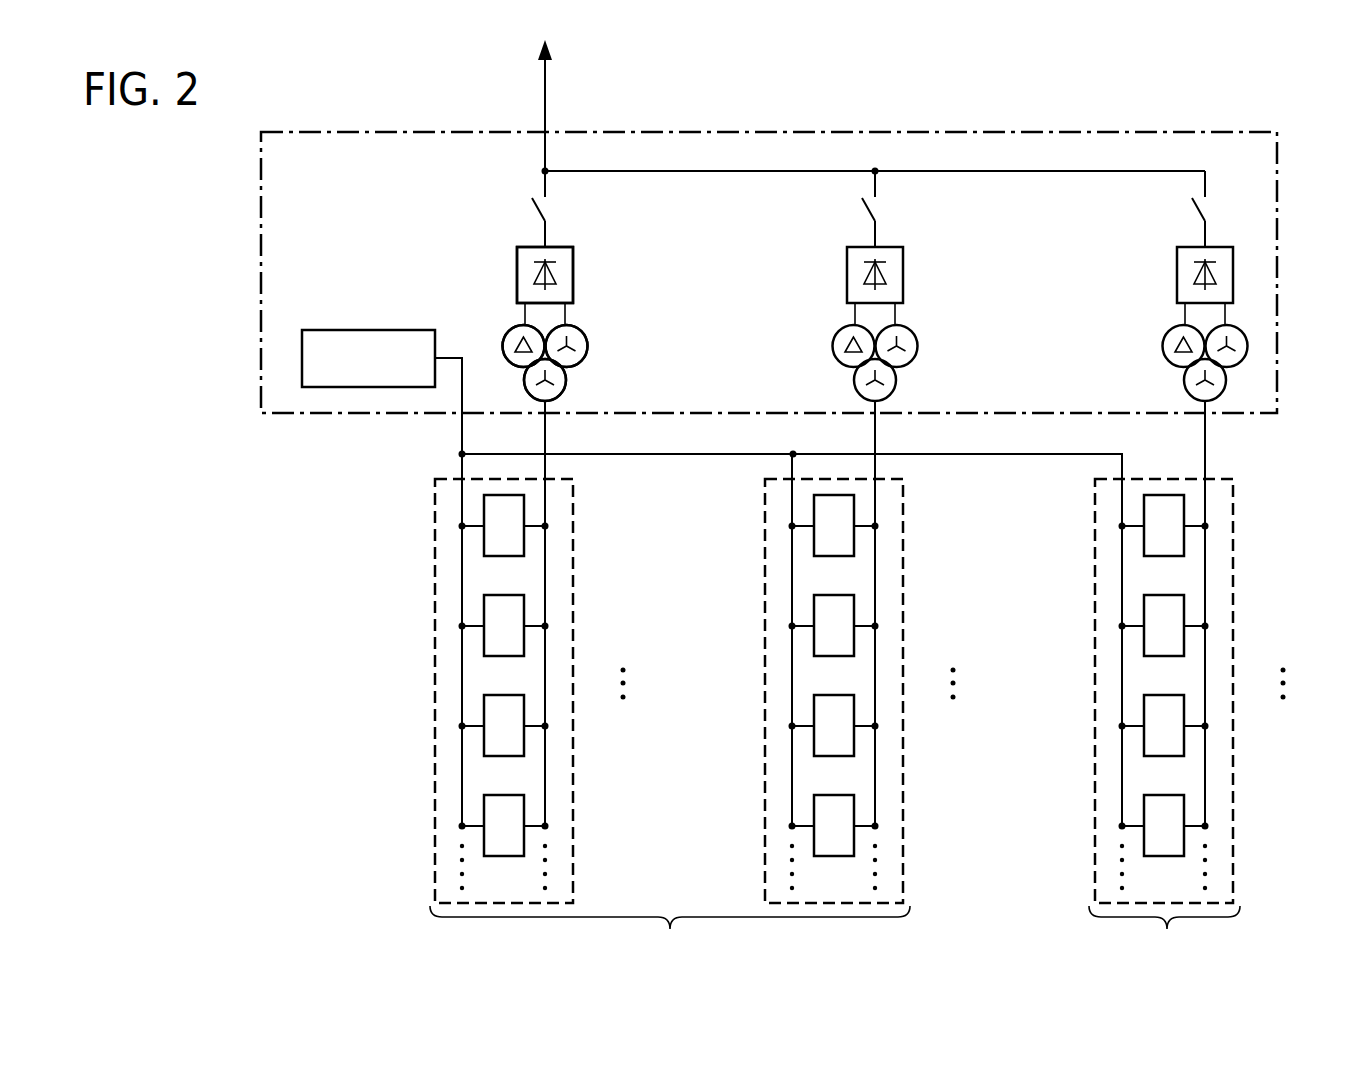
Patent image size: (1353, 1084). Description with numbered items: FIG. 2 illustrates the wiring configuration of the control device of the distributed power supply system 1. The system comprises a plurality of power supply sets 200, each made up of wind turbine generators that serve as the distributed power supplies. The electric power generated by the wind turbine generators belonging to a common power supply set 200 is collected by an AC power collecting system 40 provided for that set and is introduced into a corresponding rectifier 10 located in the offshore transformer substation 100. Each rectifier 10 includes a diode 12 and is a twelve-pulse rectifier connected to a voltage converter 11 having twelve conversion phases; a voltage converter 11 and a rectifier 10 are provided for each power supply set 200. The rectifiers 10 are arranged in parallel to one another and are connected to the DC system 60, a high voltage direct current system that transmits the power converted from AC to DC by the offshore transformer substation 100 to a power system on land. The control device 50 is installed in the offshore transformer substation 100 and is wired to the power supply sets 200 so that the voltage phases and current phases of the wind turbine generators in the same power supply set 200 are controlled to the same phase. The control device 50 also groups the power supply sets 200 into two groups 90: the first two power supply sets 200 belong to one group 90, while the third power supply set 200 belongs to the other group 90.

The distributed power supply system 1 is at (230, 762).
The offshore transformer substation 100 is at (307, 130).
The DC system 60 is at (547, 92).
The control device 50 is at (365, 330).
The rectifier 10 is at (875, 498).
The diode 12 is at (574, 275).
The voltage converter 11 is at (589, 345).
The AC power collecting system 40 is at (933, 440).
The power supply set 200 is at (808, 678).
The group 90 is at (835, 936).